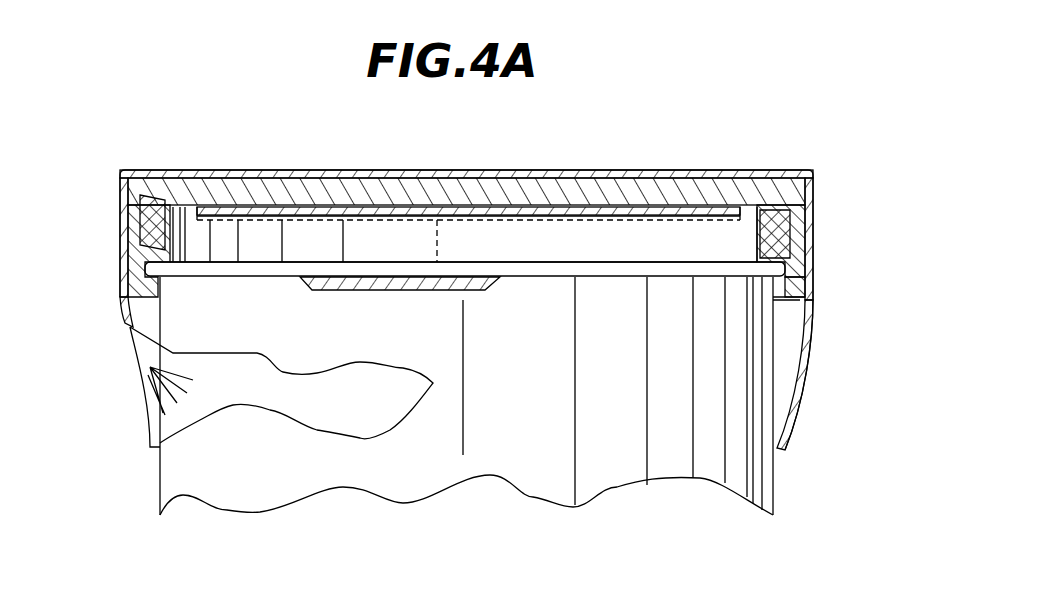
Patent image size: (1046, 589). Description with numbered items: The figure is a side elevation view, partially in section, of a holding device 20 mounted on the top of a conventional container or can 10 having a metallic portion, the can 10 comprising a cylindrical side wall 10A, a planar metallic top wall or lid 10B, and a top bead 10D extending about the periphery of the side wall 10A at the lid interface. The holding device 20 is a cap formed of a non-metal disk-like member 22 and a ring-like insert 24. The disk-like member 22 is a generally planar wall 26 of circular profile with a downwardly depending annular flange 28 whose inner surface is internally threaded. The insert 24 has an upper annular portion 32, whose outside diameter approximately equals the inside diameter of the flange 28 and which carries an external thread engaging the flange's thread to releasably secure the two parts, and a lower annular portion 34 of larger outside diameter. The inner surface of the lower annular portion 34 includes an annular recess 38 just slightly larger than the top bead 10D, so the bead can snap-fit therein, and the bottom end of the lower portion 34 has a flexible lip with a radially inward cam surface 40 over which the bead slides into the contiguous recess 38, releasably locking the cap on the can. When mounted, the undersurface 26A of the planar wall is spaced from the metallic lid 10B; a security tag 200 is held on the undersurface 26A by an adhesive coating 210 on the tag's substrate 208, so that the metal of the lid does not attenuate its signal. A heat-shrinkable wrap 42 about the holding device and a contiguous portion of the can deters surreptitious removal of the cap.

The container or can 10 is at (180, 473).
The side wall 10A is at (521, 463).
The top wall or lid 10B is at (370, 278).
The top bead 10D is at (540, 268).
The holding device 20 is at (661, 144).
The disk-like member 22 is at (563, 168).
The ring-like insert 24 is at (754, 233).
The planar wall 26 is at (205, 188).
The undersurface 26A is at (180, 262).
The annular flange 28 is at (118, 217).
The upper annular portion 32 is at (800, 187).
The lower annular portion 34 is at (795, 287).
The annular recess 38 is at (773, 281).
The cam surface 40 is at (780, 292).
The wrap 42 is at (187, 387).
The security tag 200 is at (758, 207).
The substrate 208 is at (268, 207).
The adhesive coating 210 is at (470, 203).